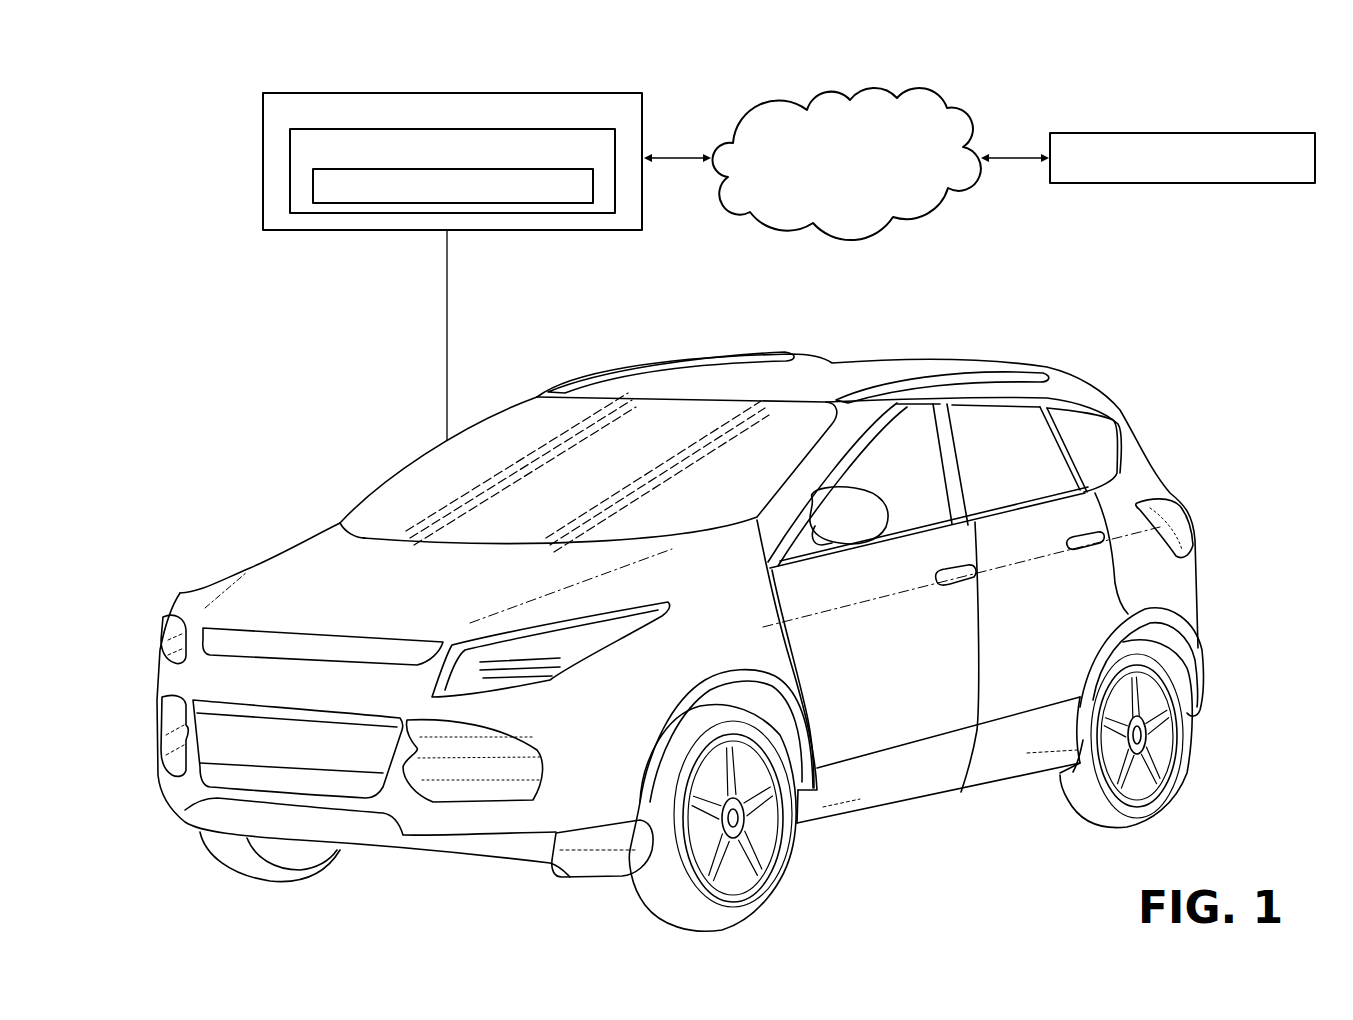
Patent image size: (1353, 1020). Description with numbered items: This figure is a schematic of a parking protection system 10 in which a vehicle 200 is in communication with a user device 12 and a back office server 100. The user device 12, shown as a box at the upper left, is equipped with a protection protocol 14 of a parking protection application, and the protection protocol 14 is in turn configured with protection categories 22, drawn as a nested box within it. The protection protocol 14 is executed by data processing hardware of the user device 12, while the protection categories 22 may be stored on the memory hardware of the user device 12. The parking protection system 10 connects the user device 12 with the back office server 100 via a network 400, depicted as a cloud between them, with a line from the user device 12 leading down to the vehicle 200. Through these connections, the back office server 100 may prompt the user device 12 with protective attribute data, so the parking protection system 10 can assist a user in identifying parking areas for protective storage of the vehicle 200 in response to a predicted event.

The parking protection system 10 is at (1140, 80).
The user device 12 is at (452, 266).
The protection protocol 14 is at (452, 171).
The protection categories 22 is at (453, 186).
The network 400 is at (847, 164).
The back office server 100 is at (1182, 158).
The vehicle 200 is at (1126, 362).